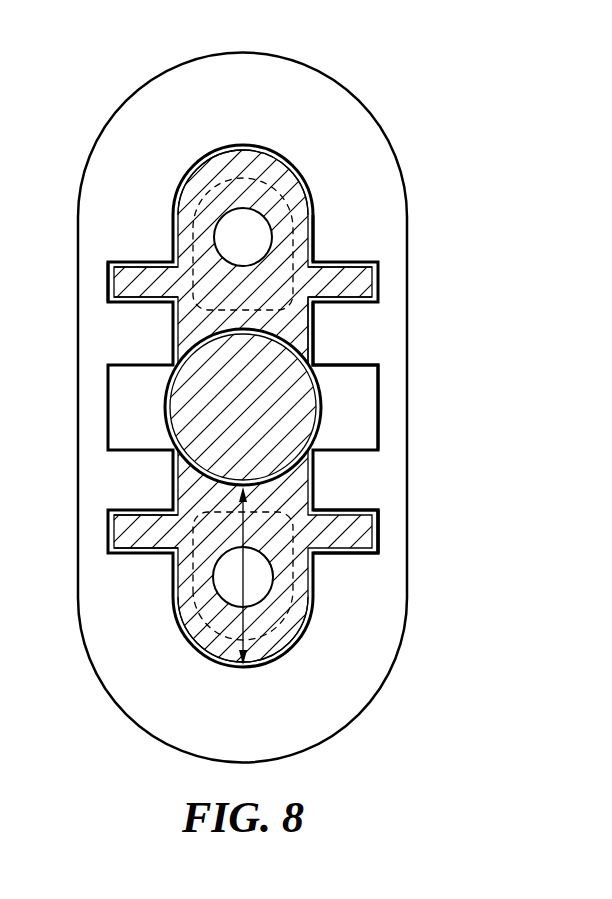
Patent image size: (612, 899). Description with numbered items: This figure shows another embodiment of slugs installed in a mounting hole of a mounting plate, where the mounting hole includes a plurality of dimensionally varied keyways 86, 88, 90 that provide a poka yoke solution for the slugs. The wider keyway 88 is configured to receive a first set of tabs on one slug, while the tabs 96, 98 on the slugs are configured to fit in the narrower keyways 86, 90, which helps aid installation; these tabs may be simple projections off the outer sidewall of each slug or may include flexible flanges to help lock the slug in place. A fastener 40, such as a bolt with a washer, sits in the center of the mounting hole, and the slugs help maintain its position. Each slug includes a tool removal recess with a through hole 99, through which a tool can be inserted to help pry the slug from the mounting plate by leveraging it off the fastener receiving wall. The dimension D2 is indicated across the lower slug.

The tab 98 is at (344, 276).
The keyway 86 is at (378, 272).
The tab 96 is at (125, 285).
The keyway 88 is at (377, 364).
The fastener 40 is at (300, 428).
The through hole 99 is at (265, 573).
The keyway 90 is at (378, 542).
The diameter D2 is at (243, 568).